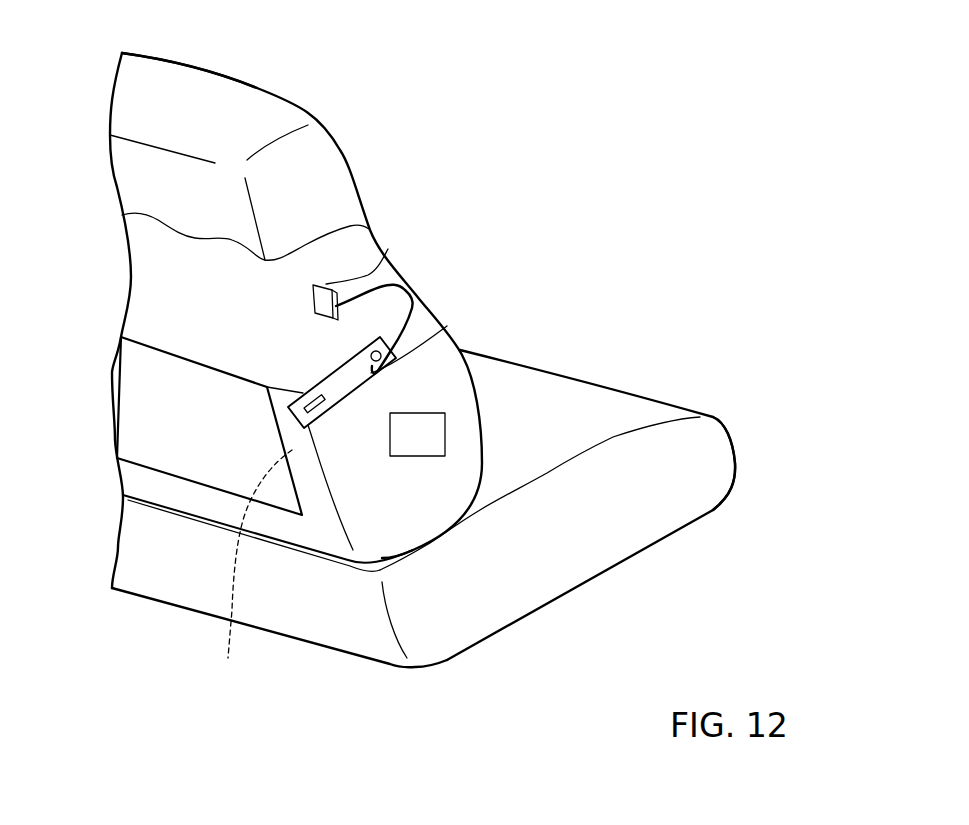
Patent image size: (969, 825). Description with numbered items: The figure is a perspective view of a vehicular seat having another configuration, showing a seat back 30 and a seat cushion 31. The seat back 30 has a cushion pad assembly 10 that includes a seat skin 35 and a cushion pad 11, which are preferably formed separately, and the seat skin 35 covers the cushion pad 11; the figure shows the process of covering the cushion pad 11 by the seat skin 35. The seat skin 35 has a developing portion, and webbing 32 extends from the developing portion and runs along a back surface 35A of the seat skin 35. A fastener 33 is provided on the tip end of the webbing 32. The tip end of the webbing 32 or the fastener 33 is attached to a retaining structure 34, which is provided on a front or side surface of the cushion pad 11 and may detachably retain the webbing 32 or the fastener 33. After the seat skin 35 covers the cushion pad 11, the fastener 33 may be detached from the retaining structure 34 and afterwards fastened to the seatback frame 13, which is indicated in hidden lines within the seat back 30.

The cushion pad assembly 10 is at (362, 175).
The cushion pad 11 is at (448, 387).
The seatback frame 13 is at (252, 570).
The seat back 30 is at (362, 107).
The seat cushion 31 is at (729, 433).
The webbing 32 is at (380, 272).
The fastener 33 is at (343, 383).
The retaining structure 34 is at (430, 436).
The seat skin 35 is at (258, 88).
The back surface 35A is at (352, 248).